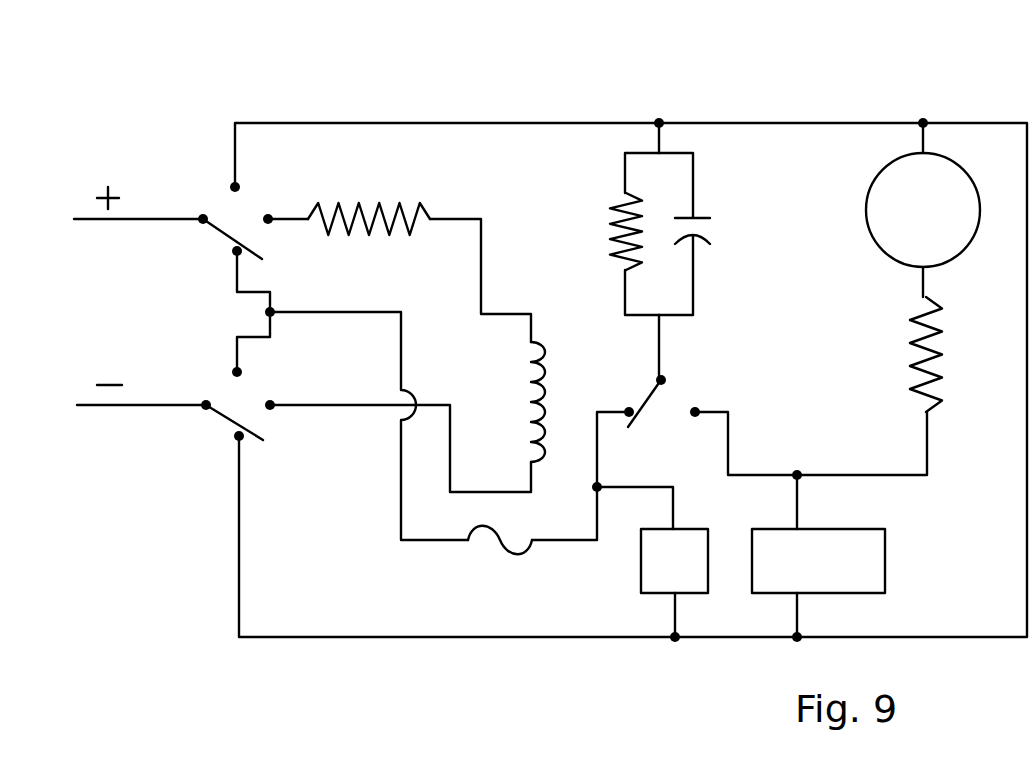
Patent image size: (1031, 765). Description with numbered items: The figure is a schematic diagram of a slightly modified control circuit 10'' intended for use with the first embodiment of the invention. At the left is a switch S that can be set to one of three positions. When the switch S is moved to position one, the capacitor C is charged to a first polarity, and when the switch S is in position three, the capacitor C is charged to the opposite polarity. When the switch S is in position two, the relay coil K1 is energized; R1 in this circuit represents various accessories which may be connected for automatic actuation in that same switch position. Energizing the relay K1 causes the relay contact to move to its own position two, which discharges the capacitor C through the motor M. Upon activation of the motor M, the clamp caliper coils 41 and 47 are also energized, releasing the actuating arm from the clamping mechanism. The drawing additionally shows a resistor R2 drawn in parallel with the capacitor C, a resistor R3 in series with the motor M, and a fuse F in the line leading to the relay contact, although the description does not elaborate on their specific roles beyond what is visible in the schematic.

The modified control circuit 10'' is at (631, 333).
The clamp caliper coil 41 is at (652, 565).
The clamp caliper coil 47 is at (873, 553).
The switch S is at (215, 312).
The accessories R1 is at (399, 252).
The resistor R2 is at (608, 234).
The resistor R3 is at (905, 354).
The capacitor C is at (700, 234).
The relay coil K1 is at (596, 402).
The fuse F is at (500, 557).
The motor M is at (923, 210).